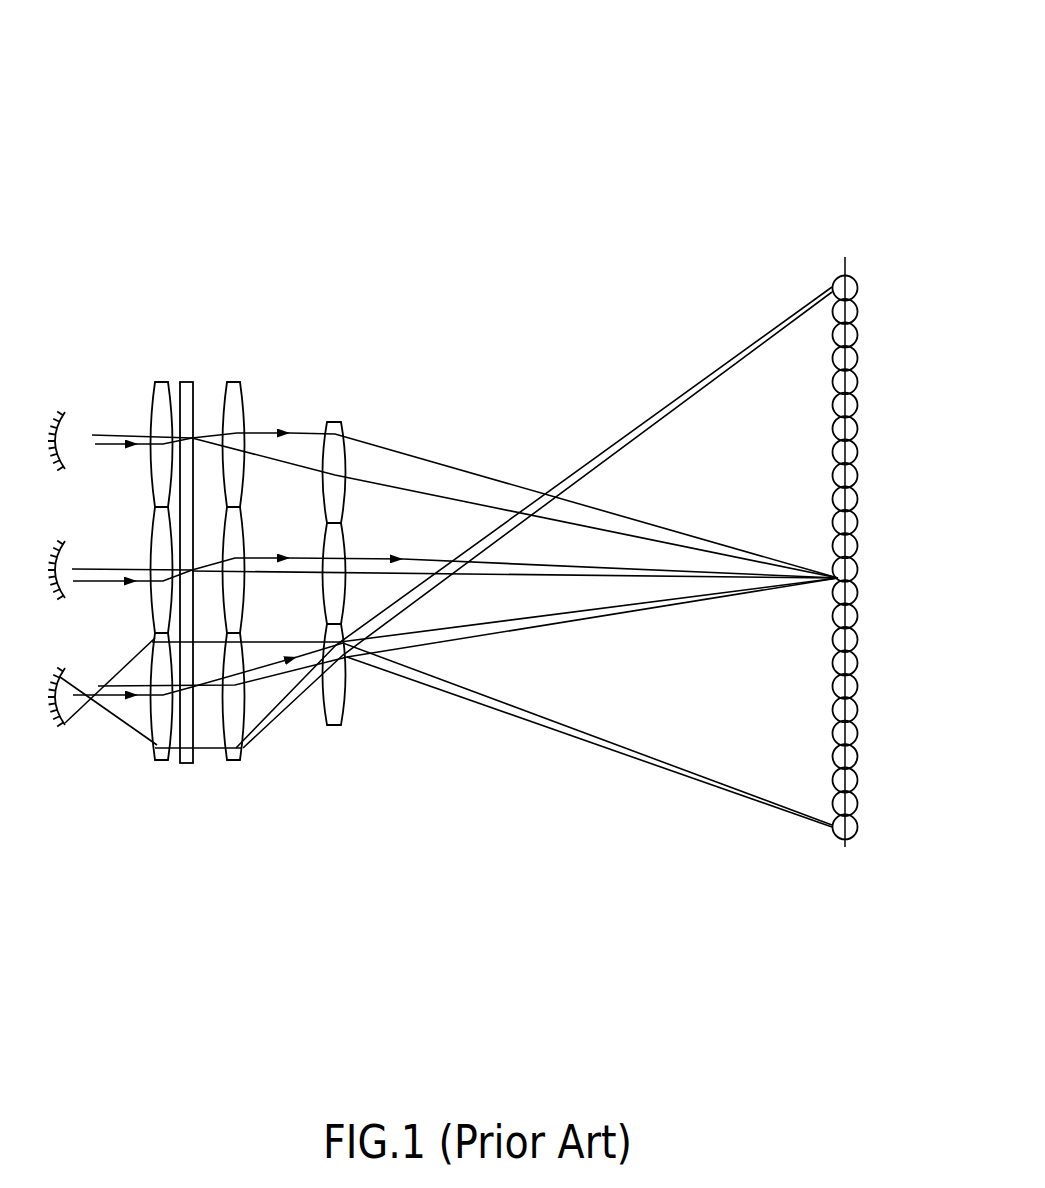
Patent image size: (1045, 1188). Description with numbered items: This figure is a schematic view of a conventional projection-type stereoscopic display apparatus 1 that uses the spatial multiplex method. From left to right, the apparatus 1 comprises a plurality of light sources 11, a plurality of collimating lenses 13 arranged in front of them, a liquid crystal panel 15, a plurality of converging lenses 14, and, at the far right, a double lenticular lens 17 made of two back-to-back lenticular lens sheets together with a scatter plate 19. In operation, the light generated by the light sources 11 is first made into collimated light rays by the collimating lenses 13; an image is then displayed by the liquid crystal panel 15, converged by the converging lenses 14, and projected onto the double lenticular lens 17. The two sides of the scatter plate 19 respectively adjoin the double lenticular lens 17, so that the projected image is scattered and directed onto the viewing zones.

The projection-type stereoscopic display apparatus 1 is at (373, 79).
The light sources 11 is at (63, 725).
The collimating lenses 13 is at (162, 762).
The converging lenses 14 is at (235, 760).
The liquid crystal panel 15 is at (187, 763).
The double lenticular lens 17 is at (858, 337).
The scatter plate 19 is at (845, 273).